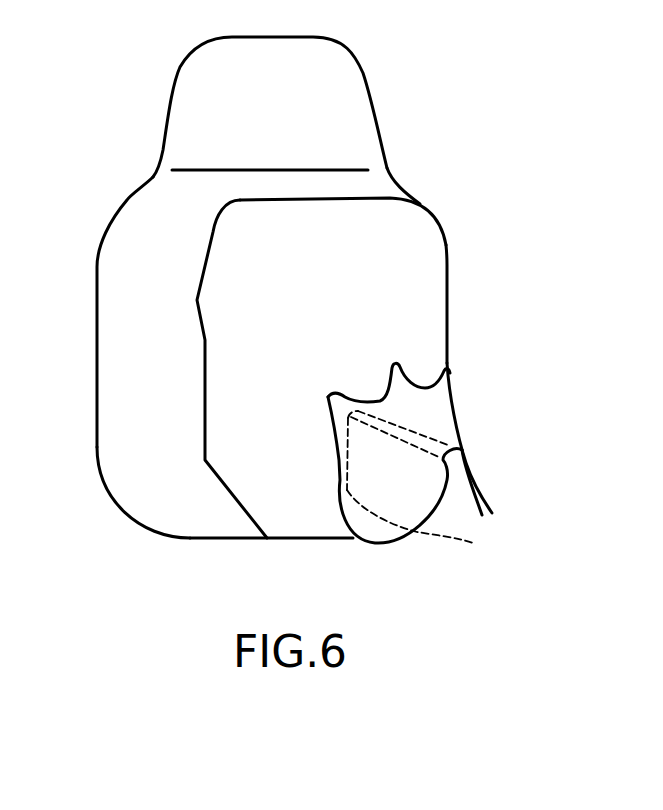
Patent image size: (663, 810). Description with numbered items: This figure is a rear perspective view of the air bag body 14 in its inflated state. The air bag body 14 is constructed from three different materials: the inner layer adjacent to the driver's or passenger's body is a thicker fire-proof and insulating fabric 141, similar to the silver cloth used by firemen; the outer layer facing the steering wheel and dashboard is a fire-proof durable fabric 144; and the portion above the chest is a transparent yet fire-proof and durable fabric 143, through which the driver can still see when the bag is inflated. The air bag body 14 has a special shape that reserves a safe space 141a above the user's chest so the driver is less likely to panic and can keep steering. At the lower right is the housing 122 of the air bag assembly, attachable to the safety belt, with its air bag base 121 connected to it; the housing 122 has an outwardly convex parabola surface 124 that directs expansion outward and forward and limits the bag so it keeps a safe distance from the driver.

The air bag body 14 is at (155, 125).
The thicker fire-proof and insulating fabric 141 is at (417, 265).
The safe space 141a is at (372, 182).
The transparent yet fire-proof and durable fabric 143 is at (323, 63).
The fire-proof durable fabric 144 is at (152, 503).
The housing 122 is at (440, 395).
The air bag base 121 is at (470, 500).
The parabola surface 124 is at (378, 503).